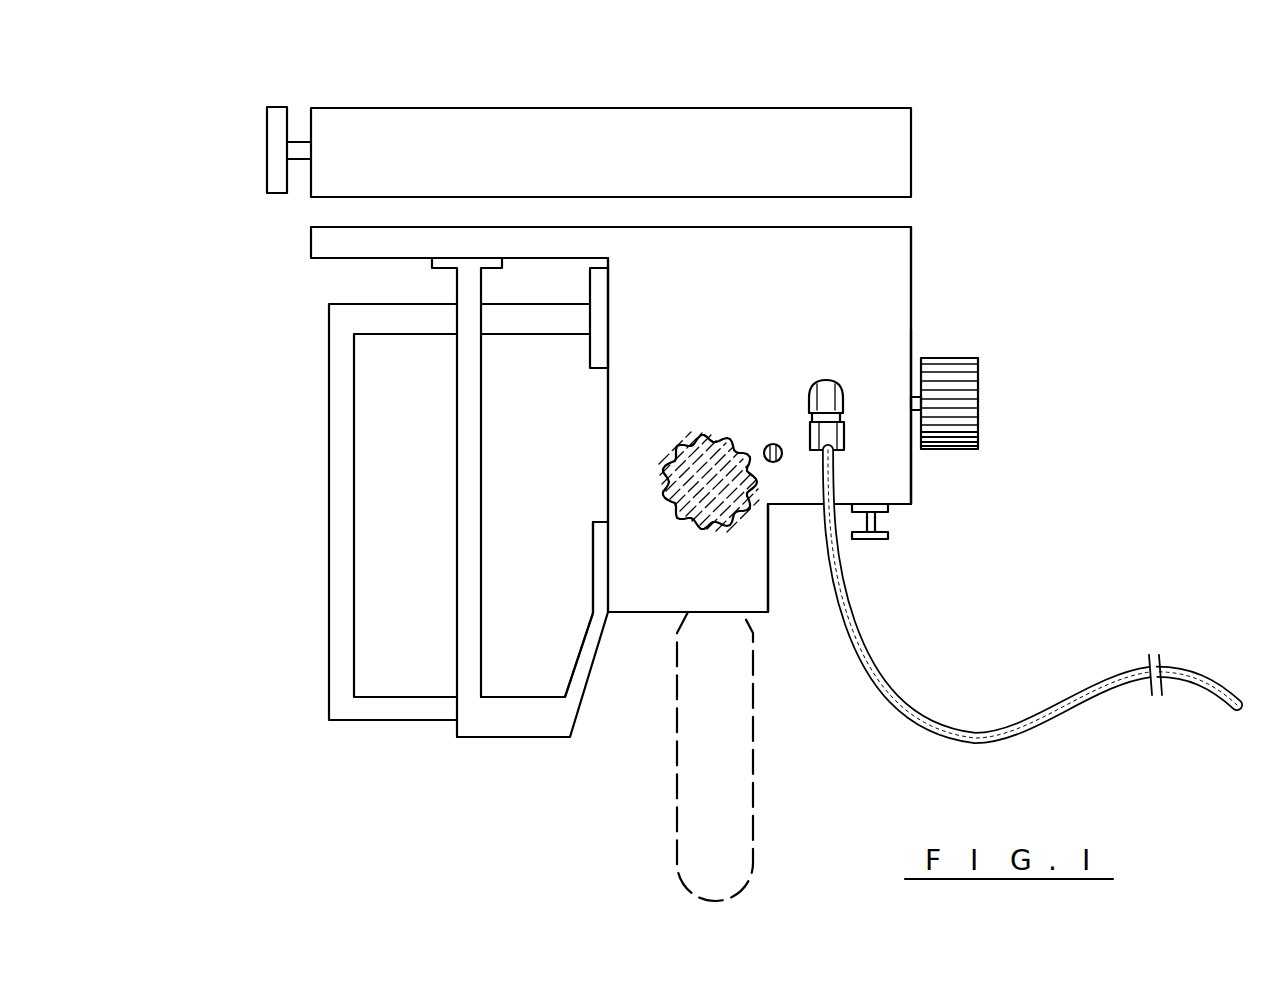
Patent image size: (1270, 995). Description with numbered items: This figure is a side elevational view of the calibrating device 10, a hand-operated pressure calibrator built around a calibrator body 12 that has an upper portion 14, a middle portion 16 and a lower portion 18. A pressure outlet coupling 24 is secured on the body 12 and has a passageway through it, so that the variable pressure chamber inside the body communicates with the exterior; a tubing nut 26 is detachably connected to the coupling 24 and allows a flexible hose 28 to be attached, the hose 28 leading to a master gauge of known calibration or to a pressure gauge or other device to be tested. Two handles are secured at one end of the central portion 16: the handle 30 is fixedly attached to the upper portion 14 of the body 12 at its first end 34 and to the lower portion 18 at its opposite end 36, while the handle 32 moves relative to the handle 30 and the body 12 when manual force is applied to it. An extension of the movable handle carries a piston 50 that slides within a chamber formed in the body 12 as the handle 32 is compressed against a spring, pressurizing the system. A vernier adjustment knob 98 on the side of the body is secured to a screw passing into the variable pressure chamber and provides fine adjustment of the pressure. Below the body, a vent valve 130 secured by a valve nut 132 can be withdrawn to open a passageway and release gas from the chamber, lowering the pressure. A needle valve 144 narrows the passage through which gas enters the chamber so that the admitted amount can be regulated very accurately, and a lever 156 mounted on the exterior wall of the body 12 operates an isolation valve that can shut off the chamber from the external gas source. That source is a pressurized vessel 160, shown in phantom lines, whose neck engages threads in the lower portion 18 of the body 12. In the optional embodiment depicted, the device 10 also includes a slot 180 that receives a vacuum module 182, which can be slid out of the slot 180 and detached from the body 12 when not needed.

The calibrating device 10 is at (666, 95).
The calibrator body 12 is at (913, 330).
The upper portion 14 is at (318, 240).
The middle portion 16 is at (873, 282).
The lower portion 18 is at (740, 584).
The pressure outlet coupling 24 is at (823, 383).
The tubing nut 26 is at (830, 436).
The flexible hose 28 is at (888, 685).
The handle 30 is at (468, 488).
The handle 32 is at (333, 403).
The first end 34 is at (462, 287).
The opposite end 36 is at (600, 572).
The piston 50 is at (588, 285).
The vernier adjustment knob 98 is at (970, 406).
The vent valve 130 is at (890, 540).
The valve nut 132 is at (890, 510).
The needle valve 144 is at (772, 446).
The lever 156 is at (675, 468).
The pressurized vessel 160 is at (728, 792).
The slot 180 is at (900, 226).
The vacuum module 182 is at (897, 108).